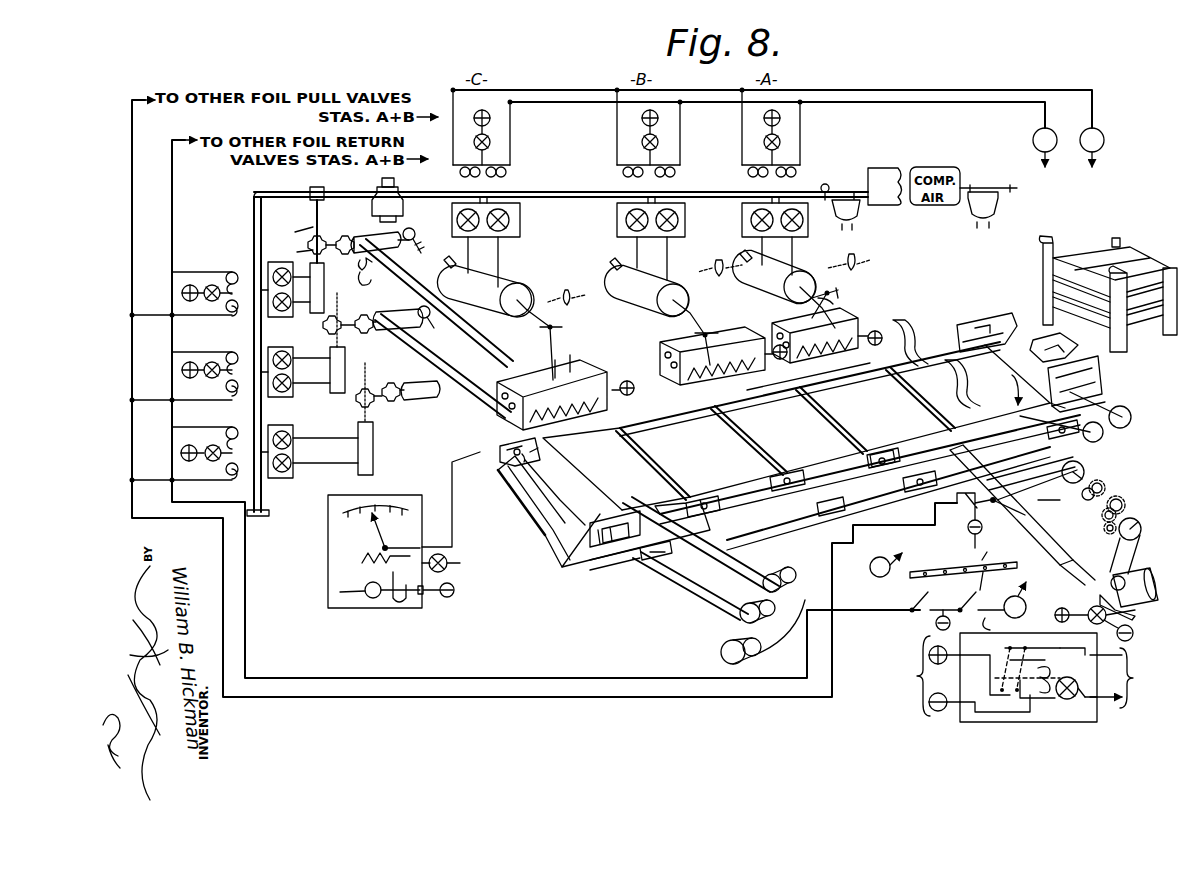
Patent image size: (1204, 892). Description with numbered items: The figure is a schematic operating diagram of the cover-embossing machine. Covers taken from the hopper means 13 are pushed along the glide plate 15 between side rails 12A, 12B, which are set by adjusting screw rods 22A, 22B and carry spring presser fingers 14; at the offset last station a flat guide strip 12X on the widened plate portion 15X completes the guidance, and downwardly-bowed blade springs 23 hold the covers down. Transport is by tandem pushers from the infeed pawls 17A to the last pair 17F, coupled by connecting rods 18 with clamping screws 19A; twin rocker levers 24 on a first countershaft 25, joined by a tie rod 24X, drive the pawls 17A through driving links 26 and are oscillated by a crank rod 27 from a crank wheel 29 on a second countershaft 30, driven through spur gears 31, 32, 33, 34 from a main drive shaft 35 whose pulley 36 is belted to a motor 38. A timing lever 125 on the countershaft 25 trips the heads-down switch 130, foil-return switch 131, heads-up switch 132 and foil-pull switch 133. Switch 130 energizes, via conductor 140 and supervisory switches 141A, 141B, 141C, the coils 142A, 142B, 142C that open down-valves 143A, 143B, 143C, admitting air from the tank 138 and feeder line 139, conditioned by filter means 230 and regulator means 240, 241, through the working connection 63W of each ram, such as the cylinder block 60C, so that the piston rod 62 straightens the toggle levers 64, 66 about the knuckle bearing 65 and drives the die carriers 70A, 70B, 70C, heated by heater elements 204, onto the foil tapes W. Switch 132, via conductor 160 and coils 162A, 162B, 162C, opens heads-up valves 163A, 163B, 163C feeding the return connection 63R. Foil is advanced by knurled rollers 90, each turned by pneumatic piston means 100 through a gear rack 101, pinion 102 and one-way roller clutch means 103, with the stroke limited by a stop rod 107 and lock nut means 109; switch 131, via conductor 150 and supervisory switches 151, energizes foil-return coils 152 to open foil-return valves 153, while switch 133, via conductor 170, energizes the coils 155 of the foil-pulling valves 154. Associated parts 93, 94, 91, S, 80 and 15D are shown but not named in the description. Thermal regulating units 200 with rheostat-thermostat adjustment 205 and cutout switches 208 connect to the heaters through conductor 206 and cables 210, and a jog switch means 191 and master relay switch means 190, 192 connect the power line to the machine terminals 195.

The timing switch conductor 170 is at (132, 175).
The conductor 150 is at (175, 222).
The supervisory cutout switch 151 is at (182, 295).
The foil-return coil 152 is at (236, 312).
The foil-pulling valve coil 155 is at (232, 275).
The foil-pulling valve 154 is at (268, 274).
The foil-return air valve 153 is at (283, 312).
The pneumatic piston means 100 is at (320, 313).
The threaded stop rod 107 is at (312, 210).
The gear rack 101 is at (291, 232).
The pinion 102 is at (291, 254).
The valve 93 is at (325, 233).
The one-way roller clutch means 103 is at (358, 266).
The knurled drive roller 90 is at (366, 236).
The adjusting screw 94 is at (419, 268).
The link 91 is at (372, 281).
The feeder line 139 is at (310, 192).
The lock nut means 109 is at (326, 190).
The regulator means 241 is at (399, 190).
The regulator means 240 is at (862, 220).
The tank 138 is at (890, 174).
The filter means 230 is at (998, 206).
The conductor 140 is at (922, 90).
The conductor 160 is at (968, 103).
The supervisory cutout switch 141C is at (490, 136).
The heads-up solenoid valve coil 162C is at (512, 164).
The valve-operating coil 142C is at (505, 178).
The supervisory cutout switch 141B is at (658, 136).
The heads-up solenoid valve coil 162B is at (678, 164).
The valve-operating coil 142B is at (626, 178).
The supervisory cutout switch 141A is at (780, 136).
The heads-up solenoid valve coil 162A is at (805, 166).
The valve-operating coil 142A is at (750, 174).
The down-valve 143C is at (503, 236).
The heads-up valve 163C is at (510, 222).
The down-valve 143B is at (617, 226).
The heads-up valve 163B is at (667, 237).
The down-valve 143A is at (742, 212).
The heads-up valve 163A is at (794, 238).
The working stroke connection 63W is at (726, 256).
The cylinder block 60C is at (518, 284).
The return stroke connection 63R is at (712, 318).
The piston rod 62 is at (785, 289).
The toggle lever 64 is at (822, 310).
The knuckle bearing 65 is at (836, 297).
The toggle lever 66 is at (853, 270).
The die-carrying block 70C is at (578, 368).
The electrical heater element 204 is at (625, 380).
The die carrier 70B is at (723, 356).
The die carrier 70A is at (860, 324).
The hopper means 13 is at (1083, 252).
The side rail 12B is at (1000, 322).
The glide plate 15 is at (1058, 347).
The blade spring 23 is at (924, 330).
The infeed pawls 17A is at (988, 384).
The spring presser finger 14 is at (1104, 378).
The side rail 12A is at (1106, 390).
The adjusting screw rod 22B is at (1131, 420).
The adjusting screw rod 22A is at (1104, 436).
The feed pawls 17F is at (702, 520).
The connecting rod 18 is at (870, 507).
The clamping screw 19A is at (962, 480).
The driving link 26 is at (1031, 474).
The crank rod 27 is at (1037, 494).
The twin rocker levers 24 is at (1030, 530).
The tie rod 24X is at (1021, 499).
The first countershaft 25 is at (1090, 597).
The crank wheel 29 is at (1085, 468).
The second countershaft 30 is at (1082, 496).
The spur gear 31 is at (1105, 484).
The spur gear 32 is at (1120, 498).
The spur gear 33 is at (1117, 513).
The spur gear 34 is at (1104, 529).
The main drive shaft 35 is at (1141, 528).
The pulley 36 is at (1138, 548).
The motor 38 is at (1153, 590).
The flat guide strip 12X is at (503, 476).
The widened glide plate portion 15X is at (532, 520).
The foil tapes W is at (470, 346).
The pulley S is at (763, 615).
The pulley 80 is at (721, 652).
The thermal regulating unit 200 is at (368, 610).
The rheostat and thermostat adjustment 205 is at (350, 582).
The cables 210 is at (428, 466).
The conductor 206 is at (460, 563).
The cutout switch 208 is at (454, 586).
The line 15D is at (850, 610).
The foil-return switch 131 is at (918, 597).
The heads-down switch 130 is at (976, 604).
The timing lever 125 is at (953, 561).
The heads-up switch 132 is at (985, 565).
The foil-pull switch 133 is at (935, 525).
The switch means 191 is at (1133, 636).
The master power terminals 195 is at (918, 698).
The master relay switch means 190 is at (1068, 700).
The master relay switch means 192 is at (1045, 700).